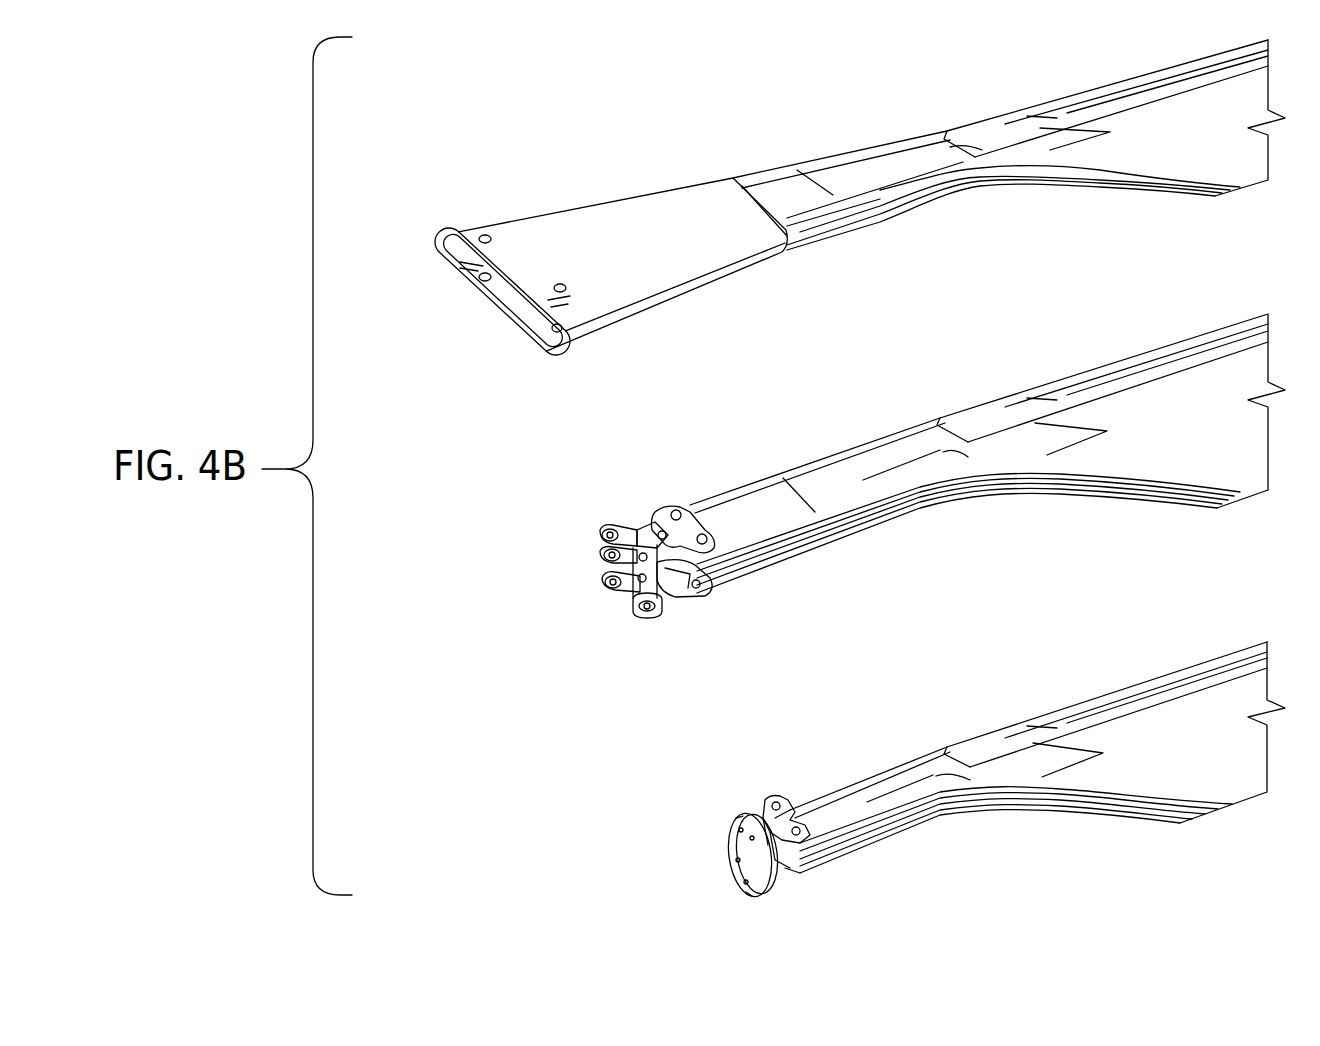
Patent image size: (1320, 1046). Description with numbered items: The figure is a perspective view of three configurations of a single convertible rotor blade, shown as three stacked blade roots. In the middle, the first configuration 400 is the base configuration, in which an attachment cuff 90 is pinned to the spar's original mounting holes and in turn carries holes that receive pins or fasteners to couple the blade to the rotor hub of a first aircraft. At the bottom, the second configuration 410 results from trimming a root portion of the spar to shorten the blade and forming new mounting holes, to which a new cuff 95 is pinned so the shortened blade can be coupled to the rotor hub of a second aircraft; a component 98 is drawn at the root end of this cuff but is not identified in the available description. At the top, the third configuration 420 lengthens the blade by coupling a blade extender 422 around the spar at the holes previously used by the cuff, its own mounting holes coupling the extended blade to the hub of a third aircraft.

The third configuration 420 is at (443, 212).
The blade extender 422 is at (607, 203).
The first configuration 400 is at (596, 505).
The attachment cuff 90 is at (603, 588).
The second configuration 410 is at (708, 787).
The new cuff 95 is at (742, 866).
The flange 98 is at (740, 881).